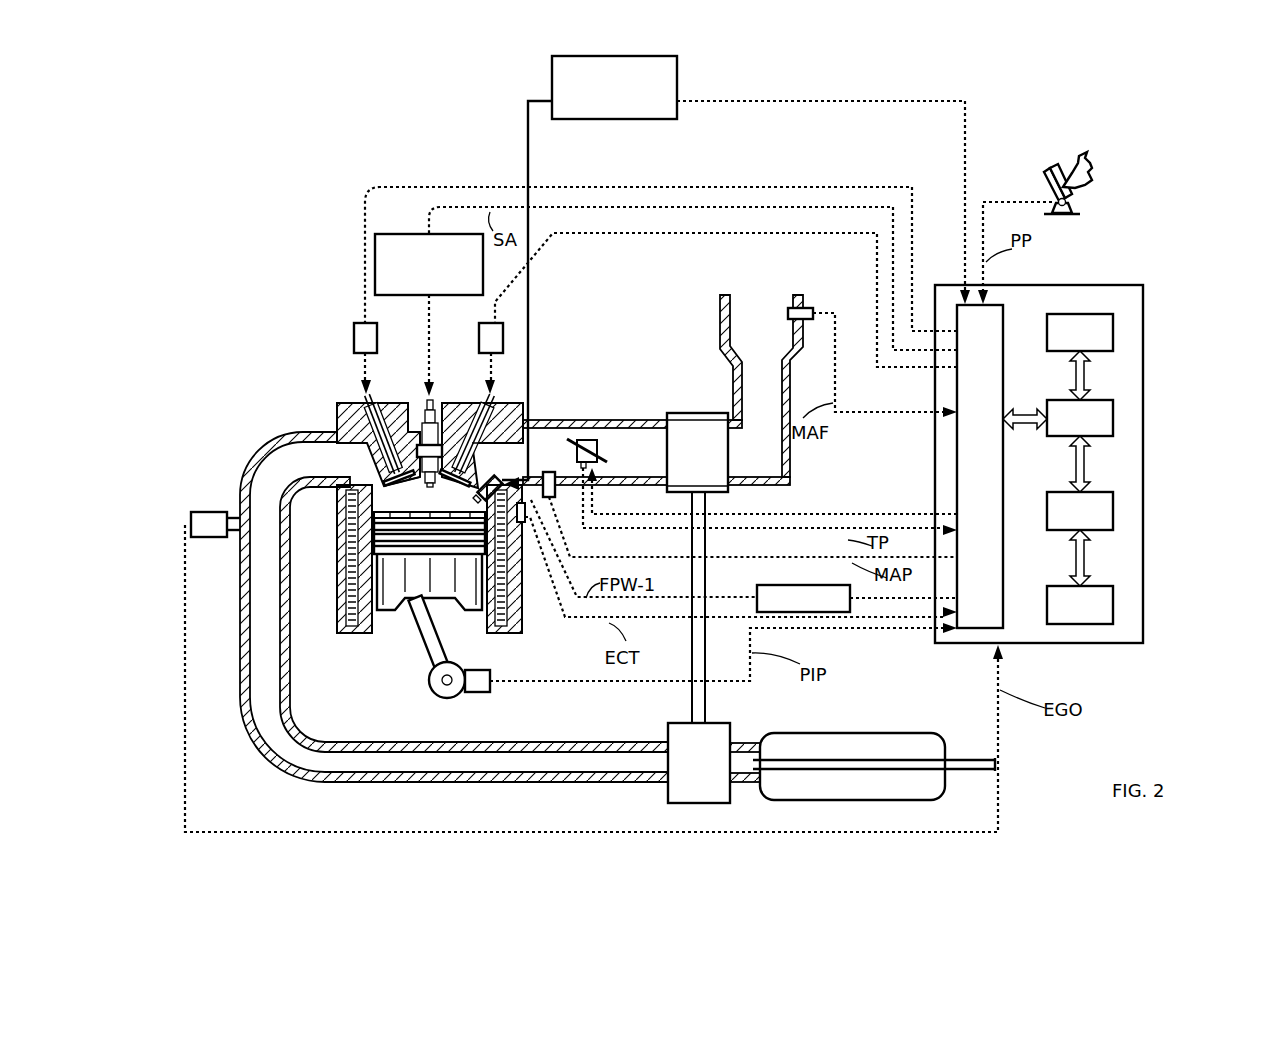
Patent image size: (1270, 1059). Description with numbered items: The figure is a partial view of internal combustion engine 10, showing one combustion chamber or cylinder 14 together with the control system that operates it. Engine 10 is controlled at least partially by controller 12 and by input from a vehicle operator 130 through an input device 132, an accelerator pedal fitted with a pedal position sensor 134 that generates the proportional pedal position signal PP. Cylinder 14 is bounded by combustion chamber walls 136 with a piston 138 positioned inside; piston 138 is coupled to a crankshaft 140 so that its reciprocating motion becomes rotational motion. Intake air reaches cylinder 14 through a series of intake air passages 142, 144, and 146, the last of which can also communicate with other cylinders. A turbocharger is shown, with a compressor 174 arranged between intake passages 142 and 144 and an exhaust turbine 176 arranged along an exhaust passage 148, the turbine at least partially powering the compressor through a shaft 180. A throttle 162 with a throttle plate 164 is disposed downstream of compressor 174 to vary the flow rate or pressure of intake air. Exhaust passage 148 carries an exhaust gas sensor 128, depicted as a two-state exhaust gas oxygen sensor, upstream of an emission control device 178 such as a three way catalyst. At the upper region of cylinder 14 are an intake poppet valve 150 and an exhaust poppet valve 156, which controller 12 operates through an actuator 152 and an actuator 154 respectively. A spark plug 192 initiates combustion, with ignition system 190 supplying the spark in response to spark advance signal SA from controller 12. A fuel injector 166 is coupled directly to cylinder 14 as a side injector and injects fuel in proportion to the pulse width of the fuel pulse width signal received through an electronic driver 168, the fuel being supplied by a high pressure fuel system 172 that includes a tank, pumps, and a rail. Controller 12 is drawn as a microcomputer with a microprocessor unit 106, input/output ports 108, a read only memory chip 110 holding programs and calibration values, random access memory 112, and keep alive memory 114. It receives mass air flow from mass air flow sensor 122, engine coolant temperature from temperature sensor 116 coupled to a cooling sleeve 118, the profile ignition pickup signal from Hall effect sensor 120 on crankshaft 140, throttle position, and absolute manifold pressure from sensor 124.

The internal combustion engine 10 is at (562, 471).
The controller 12 is at (1078, 452).
The cylinder 14 is at (355, 507).
The microprocessor unit 106 is at (1113, 420).
The input/output ports 108 is at (1005, 315).
The read only memory chip 110 is at (1113, 340).
The random access memory 112 is at (1113, 510).
The keep alive memory 114 is at (1113, 605).
The temperature sensor 116 is at (521, 527).
The cooling sleeve 118 is at (503, 588).
The Hall effect sensor 120 is at (478, 694).
The mass air flow sensor 122 is at (813, 307).
The manifold pressure sensor 124 is at (551, 498).
The exhaust gas sensor 128 is at (190, 513).
The vehicle operator 130 is at (1087, 164).
The input device 132 is at (1044, 177).
The pedal position sensor 134 is at (1073, 203).
The combustion chamber walls 136 is at (377, 622).
The piston 138 is at (417, 613).
The crankshaft 140 is at (440, 696).
The intake air passage 142 is at (761, 386).
The intake air passage 144 is at (656, 452).
The intake air passage 146 is at (517, 451).
The exhaust passage 148 is at (454, 607).
The intake poppet valve 150 is at (445, 432).
The actuator 152 is at (478, 338).
The actuator 154 is at (352, 332).
The exhaust poppet valve 156 is at (368, 448).
The throttle 162 is at (588, 436).
The throttle plate 164 is at (566, 437).
The fuel injector 166 is at (496, 478).
The electronic driver 168 is at (757, 586).
The high pressure fuel system 172 is at (678, 62).
The compressor 174 is at (683, 412).
The exhaust turbine 176 is at (668, 788).
The emission control device 178 is at (925, 738).
The shaft 180 is at (697, 687).
The ignition system 190 is at (394, 231).
The spark plug 192 is at (421, 430).